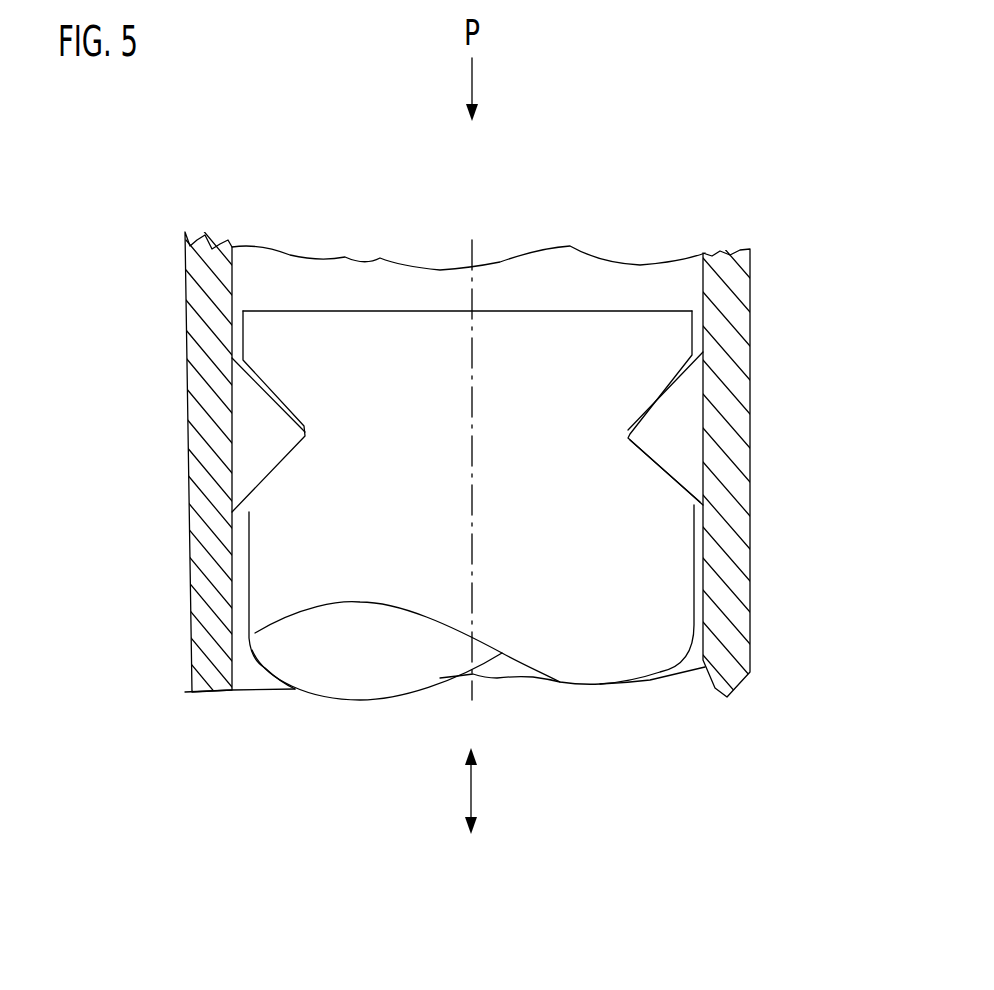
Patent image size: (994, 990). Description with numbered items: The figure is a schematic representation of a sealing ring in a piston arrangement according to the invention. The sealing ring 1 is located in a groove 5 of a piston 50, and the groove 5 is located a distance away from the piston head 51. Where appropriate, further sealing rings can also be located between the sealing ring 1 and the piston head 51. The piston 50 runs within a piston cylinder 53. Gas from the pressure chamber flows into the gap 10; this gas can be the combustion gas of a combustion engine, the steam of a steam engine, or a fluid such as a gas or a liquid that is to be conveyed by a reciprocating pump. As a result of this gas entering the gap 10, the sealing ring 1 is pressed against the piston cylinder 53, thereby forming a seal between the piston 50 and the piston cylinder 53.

The sealing ring 1 is at (680, 442).
The groove 5 is at (668, 485).
The gap 10 is at (668, 372).
The piston 50 is at (664, 571).
The piston head 51 is at (613, 294).
The piston cylinder 53 is at (735, 520).